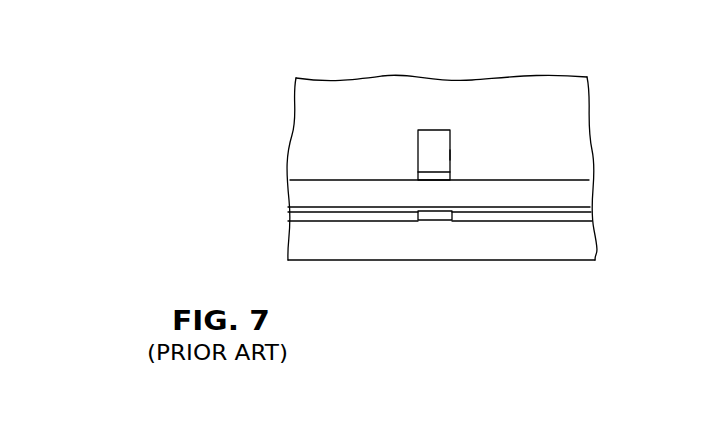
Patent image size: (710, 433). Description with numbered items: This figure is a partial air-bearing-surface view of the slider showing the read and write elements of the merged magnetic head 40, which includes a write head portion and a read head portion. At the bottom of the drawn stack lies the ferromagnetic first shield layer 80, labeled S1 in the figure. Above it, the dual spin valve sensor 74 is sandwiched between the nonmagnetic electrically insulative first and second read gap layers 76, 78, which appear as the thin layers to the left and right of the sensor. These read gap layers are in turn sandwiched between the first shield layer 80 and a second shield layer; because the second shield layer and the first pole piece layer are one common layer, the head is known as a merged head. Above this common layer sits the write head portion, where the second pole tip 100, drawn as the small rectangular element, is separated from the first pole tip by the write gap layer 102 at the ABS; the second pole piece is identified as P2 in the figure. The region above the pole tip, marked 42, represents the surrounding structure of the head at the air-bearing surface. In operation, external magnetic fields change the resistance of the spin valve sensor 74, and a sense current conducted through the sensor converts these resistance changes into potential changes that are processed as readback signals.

The merged magnetic head 40 is at (613, 88).
The upper layer 42 is at (298, 105).
The second pole tip 100 is at (440, 137).
The write gap layer 102 is at (434, 172).
The second polysilicon layer P2 is at (441, 153).
The first read gap layer 76 is at (348, 222).
The dual spin valve sensor 74 is at (433, 221).
The second read gap layer 78 is at (553, 209).
The first shield layer 80 is at (584, 243).
The substrate label S1 is at (505, 243).